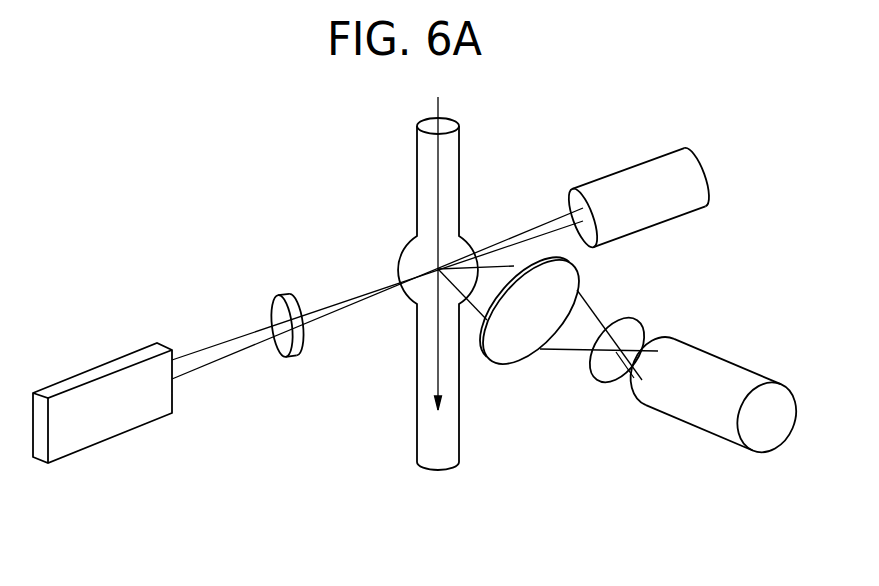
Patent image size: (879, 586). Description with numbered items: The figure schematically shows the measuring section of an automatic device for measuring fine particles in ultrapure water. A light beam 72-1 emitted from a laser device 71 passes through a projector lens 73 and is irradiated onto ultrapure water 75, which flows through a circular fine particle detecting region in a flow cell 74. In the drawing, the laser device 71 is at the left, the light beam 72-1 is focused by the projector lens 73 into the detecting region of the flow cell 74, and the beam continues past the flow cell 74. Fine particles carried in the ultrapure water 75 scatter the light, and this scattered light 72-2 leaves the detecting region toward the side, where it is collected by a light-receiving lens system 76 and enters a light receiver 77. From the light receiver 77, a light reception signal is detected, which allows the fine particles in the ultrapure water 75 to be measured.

The laser device 71 is at (103, 370).
The light beam 72-1 is at (210, 348).
The scattered light 72-2 is at (470, 307).
The projector lens 73 is at (283, 293).
The flow cell 74 is at (460, 233).
The ultrapure water 75 is at (437, 333).
The light-receiving lens system 76 is at (575, 268).
The light receiver 77 is at (733, 355).